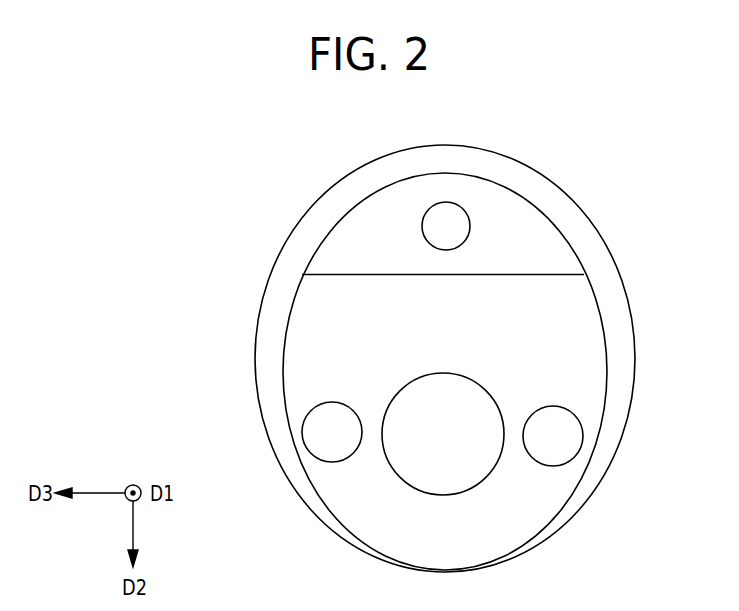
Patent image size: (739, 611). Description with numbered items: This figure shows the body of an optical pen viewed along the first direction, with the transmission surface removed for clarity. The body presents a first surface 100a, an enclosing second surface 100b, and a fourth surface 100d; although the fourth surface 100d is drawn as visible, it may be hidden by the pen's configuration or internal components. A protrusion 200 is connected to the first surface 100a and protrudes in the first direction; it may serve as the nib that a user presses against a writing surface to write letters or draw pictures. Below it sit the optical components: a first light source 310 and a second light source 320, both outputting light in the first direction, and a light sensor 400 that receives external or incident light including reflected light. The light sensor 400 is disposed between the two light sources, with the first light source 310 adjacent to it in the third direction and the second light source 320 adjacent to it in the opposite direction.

The first surface 100a is at (547, 243).
The second surface 100b is at (557, 195).
The fourth surface 100d is at (580, 313).
The protrusion 200 is at (447, 208).
The first light source 310 is at (331, 412).
The second light source 320 is at (553, 412).
The light sensor 400 is at (448, 386).